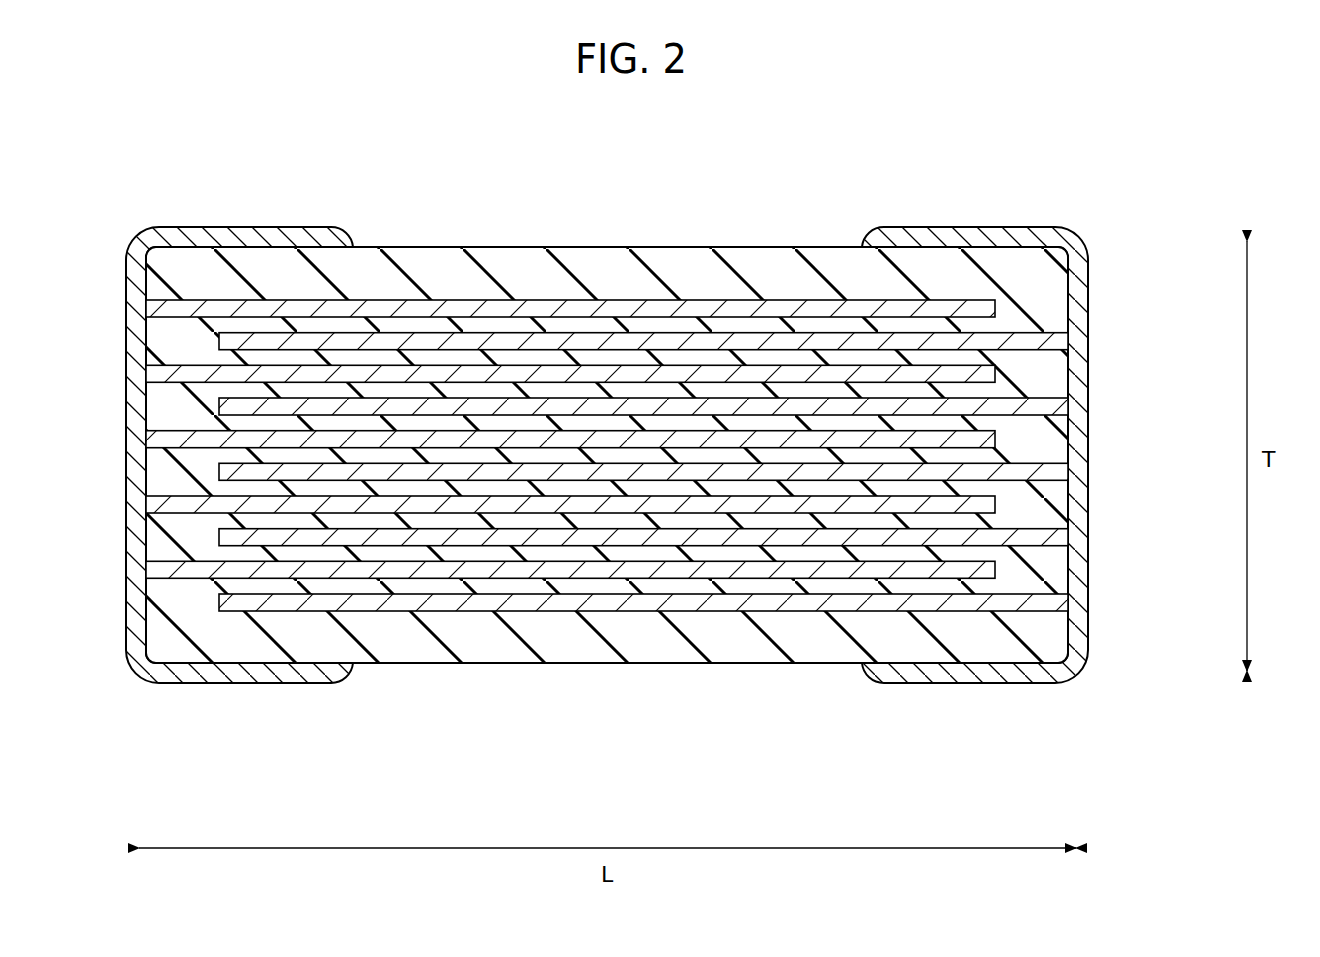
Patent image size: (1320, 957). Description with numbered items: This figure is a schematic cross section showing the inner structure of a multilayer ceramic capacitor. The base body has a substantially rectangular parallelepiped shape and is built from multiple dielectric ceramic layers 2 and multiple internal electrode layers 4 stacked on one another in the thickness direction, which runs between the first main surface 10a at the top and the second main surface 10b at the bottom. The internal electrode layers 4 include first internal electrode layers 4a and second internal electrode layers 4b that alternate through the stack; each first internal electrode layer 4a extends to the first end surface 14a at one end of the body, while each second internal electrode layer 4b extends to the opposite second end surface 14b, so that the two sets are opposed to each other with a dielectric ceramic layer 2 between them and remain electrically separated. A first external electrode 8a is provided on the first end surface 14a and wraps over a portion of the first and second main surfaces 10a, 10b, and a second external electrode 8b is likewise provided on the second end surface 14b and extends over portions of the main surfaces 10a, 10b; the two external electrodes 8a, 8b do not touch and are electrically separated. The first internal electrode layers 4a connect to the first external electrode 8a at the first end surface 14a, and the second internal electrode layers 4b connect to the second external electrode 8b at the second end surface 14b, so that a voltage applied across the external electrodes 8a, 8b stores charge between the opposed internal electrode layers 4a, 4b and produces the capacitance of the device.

The dielectric ceramic layer 2 is at (532, 268).
The internal electrode layers 4 is at (607, 372).
The first internal electrode layer 4a is at (612, 307).
The second internal electrode layer 4b is at (668, 342).
The first external electrode 8a is at (320, 227).
The second external electrode 8b is at (1077, 490).
The first main surface 10a is at (755, 238).
The second main surface 10b is at (606, 672).
The first end surface 14a is at (144, 213).
The second end surface 14b is at (1102, 336).